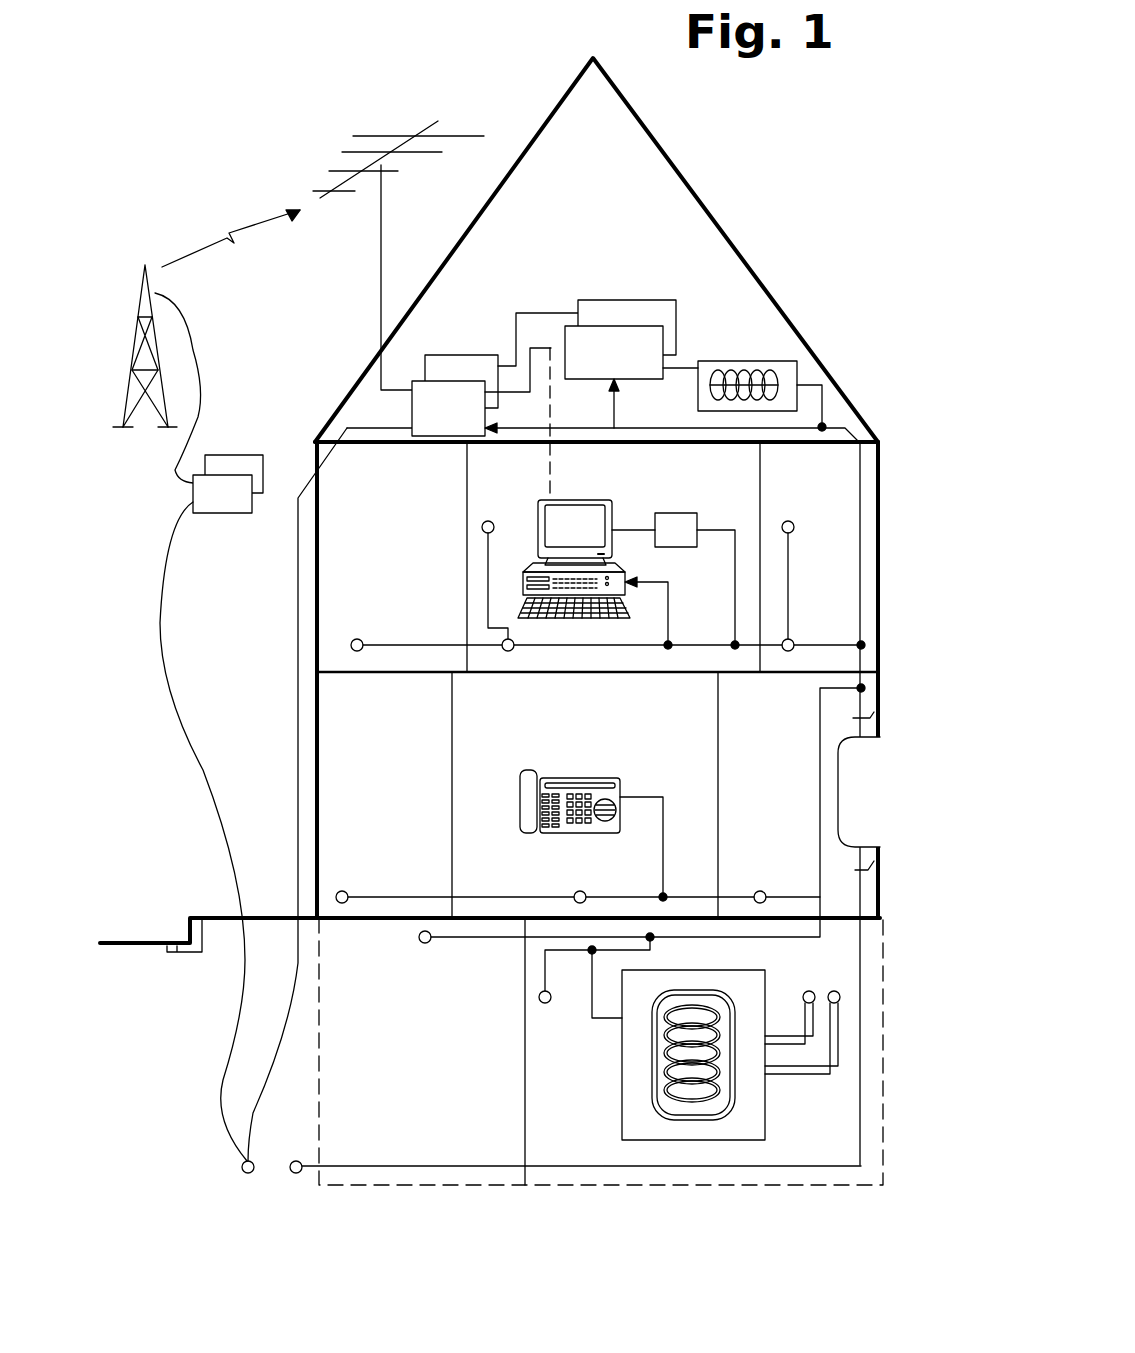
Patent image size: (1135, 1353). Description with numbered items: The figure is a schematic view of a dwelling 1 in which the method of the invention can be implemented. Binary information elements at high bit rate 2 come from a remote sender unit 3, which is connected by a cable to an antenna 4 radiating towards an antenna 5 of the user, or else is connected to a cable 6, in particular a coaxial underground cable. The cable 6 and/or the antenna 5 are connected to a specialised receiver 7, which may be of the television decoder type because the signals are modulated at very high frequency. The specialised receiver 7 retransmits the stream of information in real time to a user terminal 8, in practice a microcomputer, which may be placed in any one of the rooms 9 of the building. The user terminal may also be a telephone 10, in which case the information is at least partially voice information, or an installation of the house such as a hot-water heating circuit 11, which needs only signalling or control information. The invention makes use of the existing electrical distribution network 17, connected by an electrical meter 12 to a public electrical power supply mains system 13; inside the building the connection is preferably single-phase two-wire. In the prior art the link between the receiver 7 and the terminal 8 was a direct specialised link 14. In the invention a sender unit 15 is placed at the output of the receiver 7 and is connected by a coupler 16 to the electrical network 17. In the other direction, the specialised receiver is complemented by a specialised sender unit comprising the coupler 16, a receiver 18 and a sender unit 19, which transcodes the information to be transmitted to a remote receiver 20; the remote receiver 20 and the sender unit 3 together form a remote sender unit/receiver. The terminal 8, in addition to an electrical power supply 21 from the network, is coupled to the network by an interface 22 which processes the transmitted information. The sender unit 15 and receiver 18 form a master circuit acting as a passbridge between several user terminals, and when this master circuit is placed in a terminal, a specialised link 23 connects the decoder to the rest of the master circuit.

The dwelling 1 is at (793, 173).
The binary information elements at high bit rate 2 is at (250, 222).
The remote sender unit 3 is at (225, 507).
The antenna 4 is at (142, 297).
The antenna of a user 5 is at (387, 134).
The cable 6 is at (243, 1173).
The specialised receiver 7 is at (420, 420).
The user terminal 8 is at (583, 502).
The rooms 9 is at (740, 462).
The telephone 10 is at (567, 793).
The hot-water heating circuit 11 is at (632, 1065).
The electrical meter 12 is at (857, 797).
The public electrical power supply mains system 13 is at (297, 1174).
The direct specialised link 14 is at (548, 477).
The sender unit 15 is at (591, 373).
The coupler 16 is at (713, 364).
The electrical distribution network 17 is at (860, 467).
The receiver 18 is at (639, 305).
The sender unit 19 is at (484, 364).
The remote receiver 20 is at (250, 462).
The electrical power supply 21 is at (670, 620).
The interface 22 is at (680, 517).
The link 23 is at (538, 346).